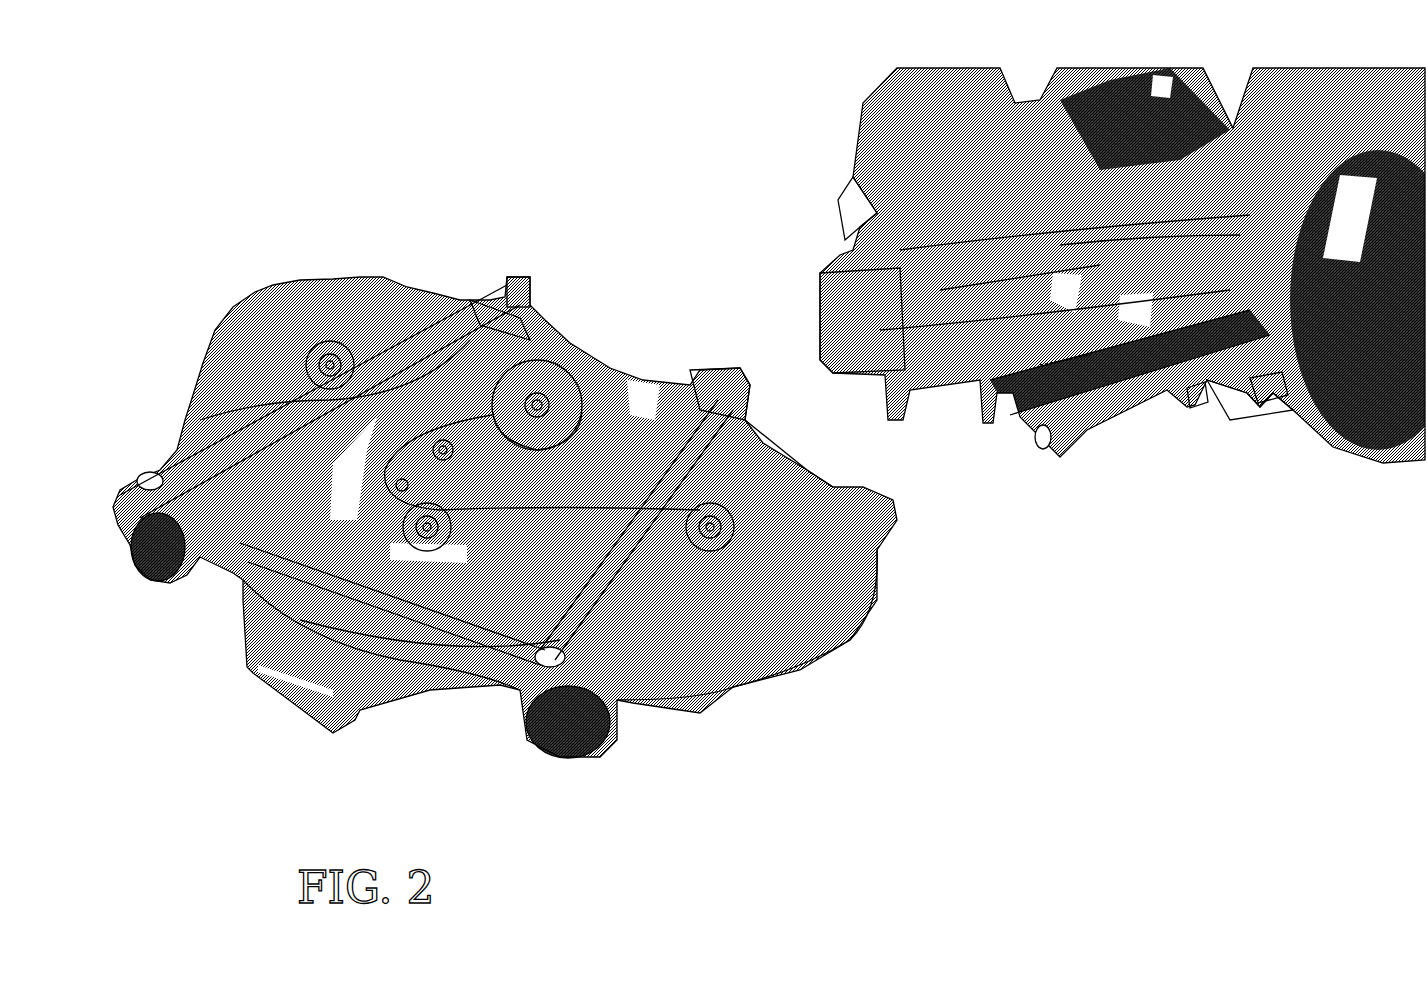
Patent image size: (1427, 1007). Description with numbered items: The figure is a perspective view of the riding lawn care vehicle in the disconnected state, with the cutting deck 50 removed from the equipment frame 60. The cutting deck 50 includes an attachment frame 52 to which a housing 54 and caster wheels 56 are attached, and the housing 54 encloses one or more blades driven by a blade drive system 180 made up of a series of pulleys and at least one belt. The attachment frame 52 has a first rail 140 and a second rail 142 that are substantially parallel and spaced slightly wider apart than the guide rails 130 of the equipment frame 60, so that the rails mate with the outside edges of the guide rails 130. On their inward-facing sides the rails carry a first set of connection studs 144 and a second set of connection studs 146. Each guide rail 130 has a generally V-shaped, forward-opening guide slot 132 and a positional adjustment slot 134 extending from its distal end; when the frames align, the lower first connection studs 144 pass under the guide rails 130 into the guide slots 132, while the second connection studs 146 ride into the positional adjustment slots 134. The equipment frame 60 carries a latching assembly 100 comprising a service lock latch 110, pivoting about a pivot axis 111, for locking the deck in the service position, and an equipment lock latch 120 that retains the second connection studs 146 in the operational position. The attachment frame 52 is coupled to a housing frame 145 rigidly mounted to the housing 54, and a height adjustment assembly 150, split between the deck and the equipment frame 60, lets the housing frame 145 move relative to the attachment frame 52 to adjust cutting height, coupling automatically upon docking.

The cutting deck 50 is at (266, 757).
The attachment frame 52 is at (663, 397).
The housing 54 is at (760, 660).
The caster wheels 56 is at (162, 567).
The equipment frame 60 is at (1223, 417).
The latching assembly 100 is at (775, 243).
The service lock latch 110 is at (822, 313).
The pivot axis 111 is at (1053, 373).
The equipment lock latch 120 is at (860, 292).
The guide rails 130 is at (940, 290).
The guide slot 132 is at (1193, 413).
The positional adjustment slot 134 is at (1050, 447).
The first rail 140 is at (513, 277).
The second rail 142 is at (720, 382).
The first set of connection studs 144 is at (520, 310).
The housing frame 145 is at (433, 640).
The second set of connection studs 146 is at (420, 343).
The height adjustment assembly 150 is at (717, 420).
The blade drive system 180 is at (767, 567).